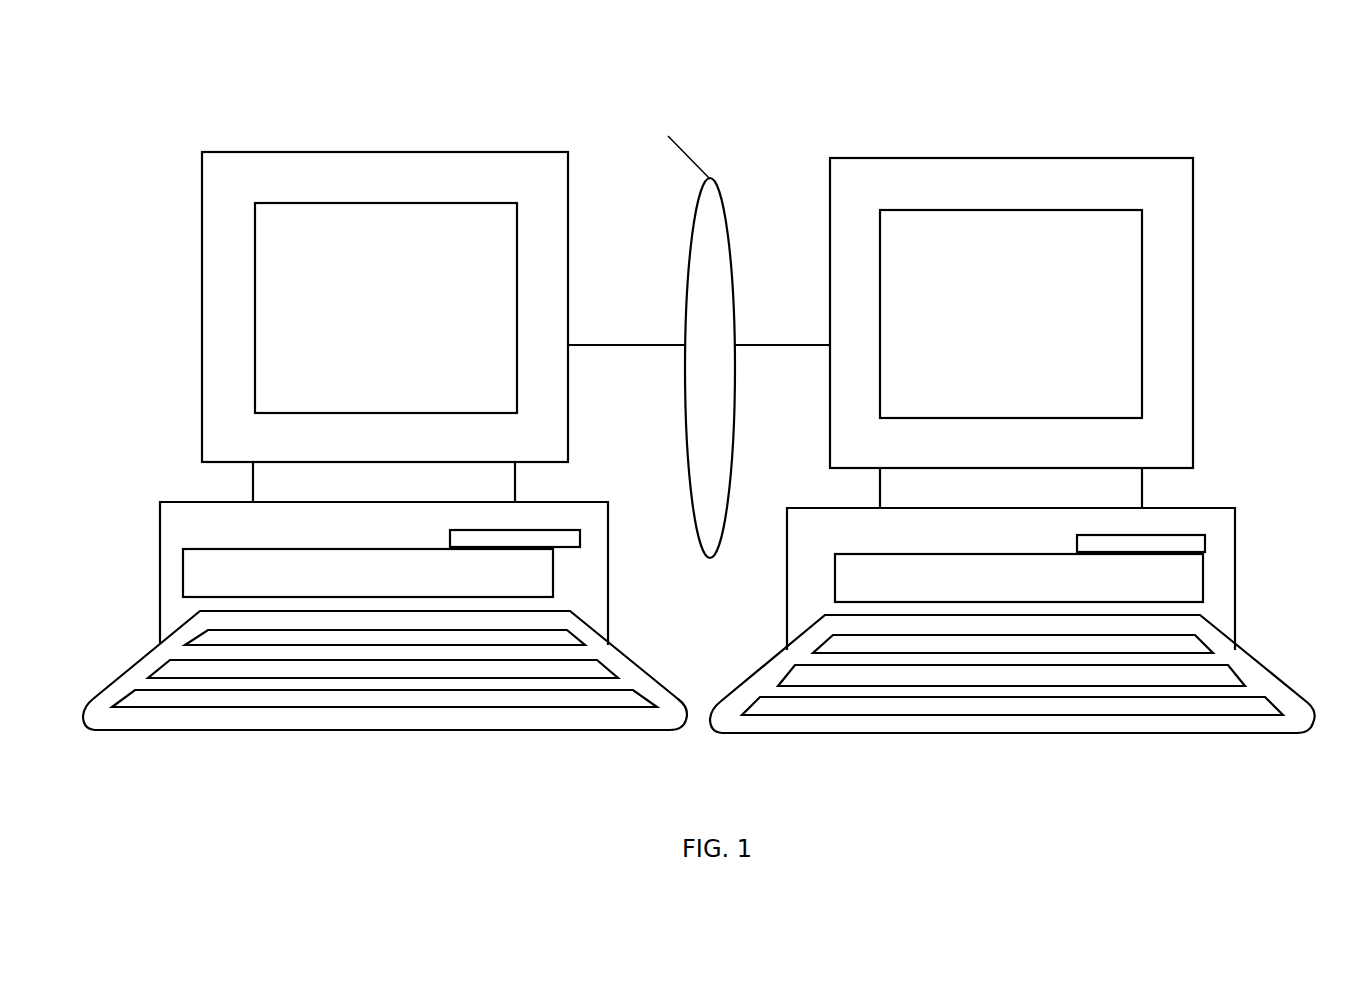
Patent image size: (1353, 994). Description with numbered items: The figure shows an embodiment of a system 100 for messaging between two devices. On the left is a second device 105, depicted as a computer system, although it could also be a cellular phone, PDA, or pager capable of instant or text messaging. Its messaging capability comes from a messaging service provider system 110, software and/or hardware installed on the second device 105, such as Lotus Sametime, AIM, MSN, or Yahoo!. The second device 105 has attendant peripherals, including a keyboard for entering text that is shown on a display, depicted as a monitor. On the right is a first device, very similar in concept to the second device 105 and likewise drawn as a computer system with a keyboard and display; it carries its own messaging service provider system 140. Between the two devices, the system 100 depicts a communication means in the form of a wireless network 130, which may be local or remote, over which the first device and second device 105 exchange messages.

The system 100 is at (305, 91).
The second device 105 is at (196, 413).
The messaging service provider system 110 is at (183, 577).
The network 130 is at (710, 179).
The messaging service provider system 140 is at (919, 554).